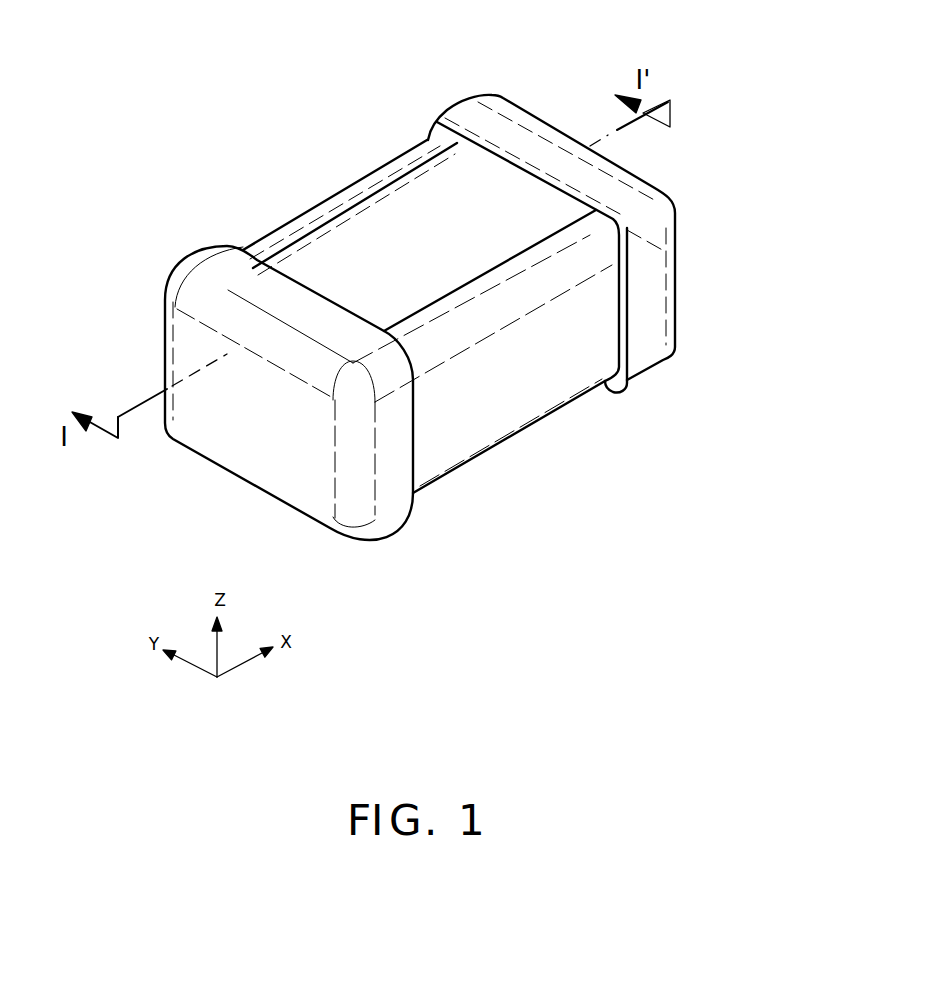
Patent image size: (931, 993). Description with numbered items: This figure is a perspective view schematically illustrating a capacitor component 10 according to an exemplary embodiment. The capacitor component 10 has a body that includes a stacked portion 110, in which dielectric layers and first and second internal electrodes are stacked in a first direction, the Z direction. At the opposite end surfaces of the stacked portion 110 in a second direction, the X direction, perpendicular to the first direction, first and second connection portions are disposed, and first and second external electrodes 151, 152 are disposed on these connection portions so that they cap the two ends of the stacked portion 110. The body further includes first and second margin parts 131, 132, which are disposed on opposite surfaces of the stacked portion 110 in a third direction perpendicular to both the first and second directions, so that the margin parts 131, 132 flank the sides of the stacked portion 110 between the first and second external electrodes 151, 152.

The capacitor component 10 is at (292, 35).
The stacked portion 110 is at (492, 187).
The first margin part 131 is at (560, 262).
The second margin part 132 is at (337, 210).
The first external electrode 151 is at (202, 263).
The second external electrode 152 is at (455, 118).